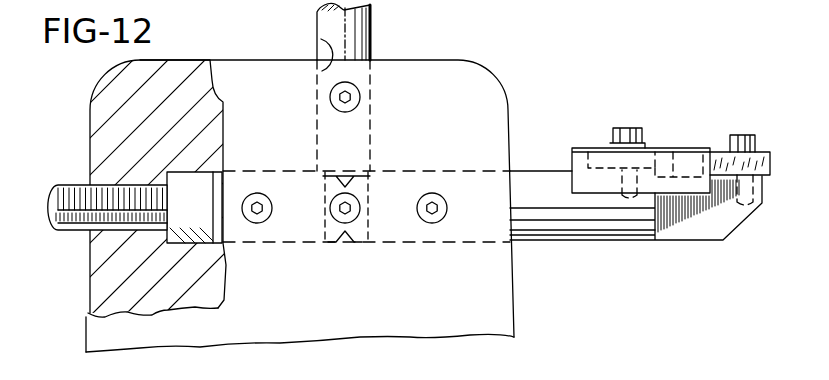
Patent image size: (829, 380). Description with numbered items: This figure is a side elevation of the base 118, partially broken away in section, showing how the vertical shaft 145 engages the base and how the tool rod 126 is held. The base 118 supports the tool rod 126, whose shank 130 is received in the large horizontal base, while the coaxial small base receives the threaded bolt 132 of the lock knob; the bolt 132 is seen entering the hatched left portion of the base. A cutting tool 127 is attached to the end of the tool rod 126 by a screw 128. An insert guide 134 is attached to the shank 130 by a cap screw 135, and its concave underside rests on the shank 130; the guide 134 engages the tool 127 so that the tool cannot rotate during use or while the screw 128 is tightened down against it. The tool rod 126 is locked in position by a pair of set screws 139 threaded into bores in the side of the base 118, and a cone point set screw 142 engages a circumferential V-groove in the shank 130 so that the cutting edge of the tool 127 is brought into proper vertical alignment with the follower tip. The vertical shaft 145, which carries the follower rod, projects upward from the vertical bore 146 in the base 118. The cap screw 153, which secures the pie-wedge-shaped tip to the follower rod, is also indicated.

The base 118 is at (508, 92).
The tool rod 126 is at (546, 233).
The cutting tool 127 is at (764, 155).
The screw 128 is at (735, 135).
The shank 130 is at (538, 170).
The threaded bolt 132 is at (70, 233).
The insert guide 134 is at (683, 146).
The cap screw 135 is at (628, 128).
The set screws 139 is at (257, 223).
The cone point set screw 142 is at (334, 217).
The vertical shaft 145 is at (372, 25).
The vertical bore 146 is at (322, 42).
The cap screw 153 is at (70, 186).